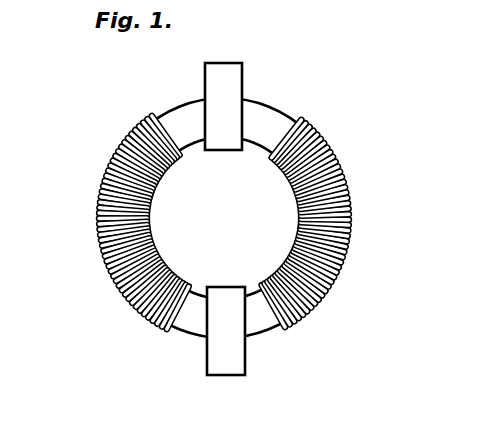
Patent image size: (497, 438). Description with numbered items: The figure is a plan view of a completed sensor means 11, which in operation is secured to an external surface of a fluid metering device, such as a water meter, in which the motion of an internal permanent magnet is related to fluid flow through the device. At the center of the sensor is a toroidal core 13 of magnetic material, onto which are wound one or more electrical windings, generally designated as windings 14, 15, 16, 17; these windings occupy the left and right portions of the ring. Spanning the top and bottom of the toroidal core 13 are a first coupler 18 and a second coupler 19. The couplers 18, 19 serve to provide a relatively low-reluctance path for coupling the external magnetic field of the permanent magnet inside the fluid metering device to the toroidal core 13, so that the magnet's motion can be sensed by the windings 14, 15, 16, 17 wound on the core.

The sensor means 11 is at (226, 223).
The toroidal core 13 is at (262, 103).
The electrical winding 14 is at (108, 222).
The electrical winding 15 is at (100, 216).
The electrical winding 16 is at (343, 223).
The electrical winding 17 is at (352, 218).
The first coupler 18 is at (205, 83).
The second coupler 19 is at (245, 360).